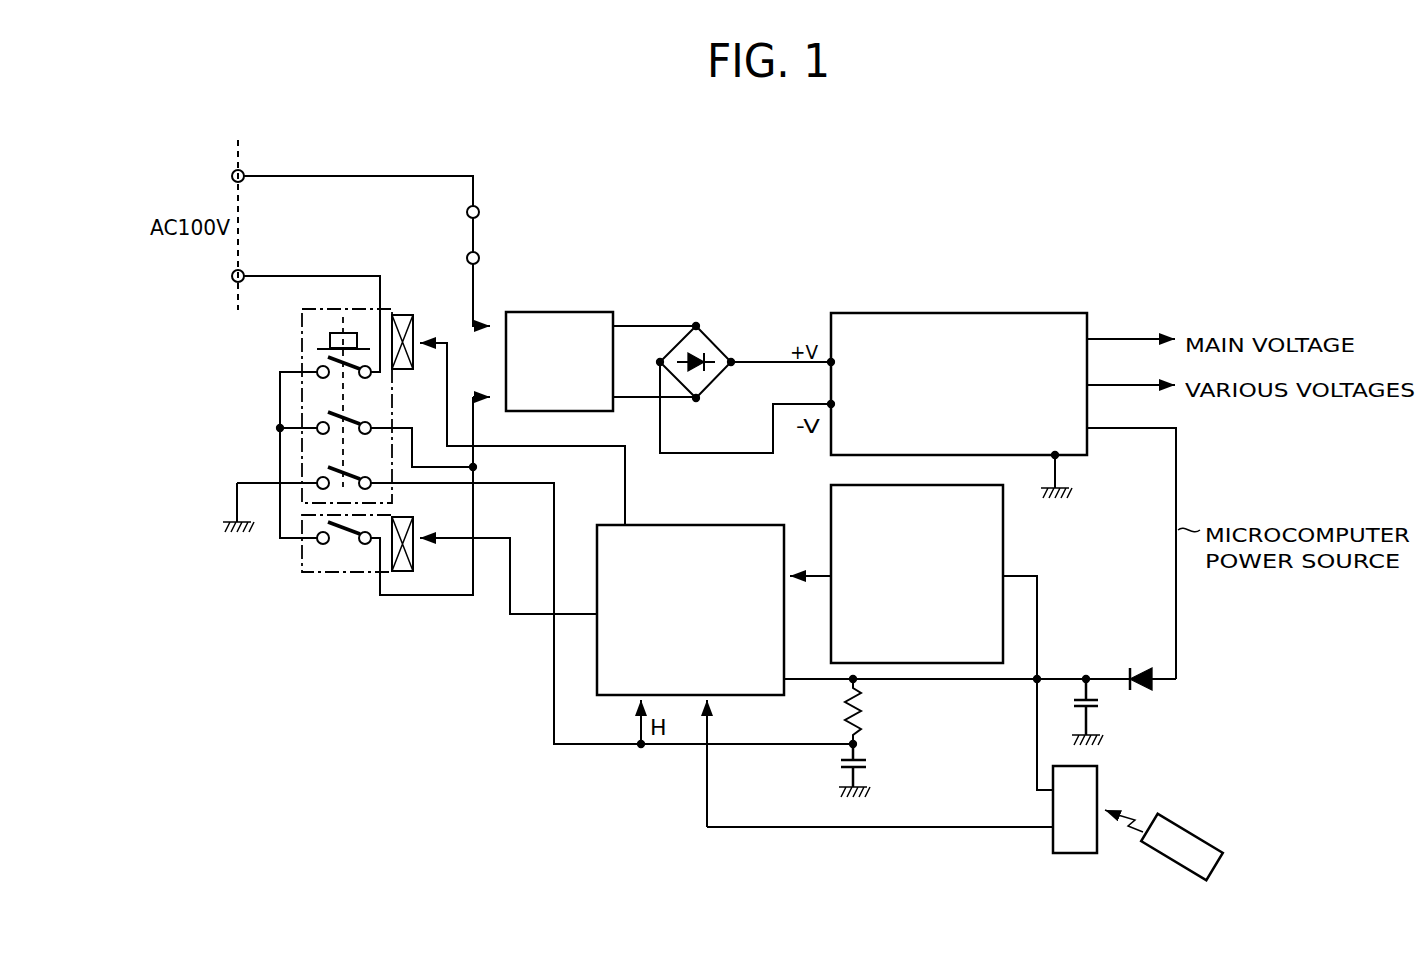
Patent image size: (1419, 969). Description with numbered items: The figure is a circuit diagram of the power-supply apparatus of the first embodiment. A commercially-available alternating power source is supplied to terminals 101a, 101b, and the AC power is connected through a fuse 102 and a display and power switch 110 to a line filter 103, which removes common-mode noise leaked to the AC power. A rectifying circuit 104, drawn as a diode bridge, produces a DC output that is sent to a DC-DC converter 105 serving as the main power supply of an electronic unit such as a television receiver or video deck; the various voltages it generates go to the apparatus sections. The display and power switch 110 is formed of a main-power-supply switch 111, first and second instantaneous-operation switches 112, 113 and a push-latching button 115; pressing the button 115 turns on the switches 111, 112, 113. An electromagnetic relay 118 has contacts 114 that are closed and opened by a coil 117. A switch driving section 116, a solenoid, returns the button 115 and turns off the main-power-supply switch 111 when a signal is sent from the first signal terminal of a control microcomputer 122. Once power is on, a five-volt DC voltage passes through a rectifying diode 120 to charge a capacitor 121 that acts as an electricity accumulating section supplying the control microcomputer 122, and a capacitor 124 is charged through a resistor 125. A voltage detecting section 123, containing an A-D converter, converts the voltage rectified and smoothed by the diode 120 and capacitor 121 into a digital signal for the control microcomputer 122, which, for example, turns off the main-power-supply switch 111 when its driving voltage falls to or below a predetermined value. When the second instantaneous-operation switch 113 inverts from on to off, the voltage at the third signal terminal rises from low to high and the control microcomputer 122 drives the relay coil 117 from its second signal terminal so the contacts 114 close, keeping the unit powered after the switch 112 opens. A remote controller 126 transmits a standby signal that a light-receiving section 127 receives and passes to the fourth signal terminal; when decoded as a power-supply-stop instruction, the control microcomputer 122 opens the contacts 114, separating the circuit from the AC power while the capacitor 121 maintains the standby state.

The terminal 101a is at (245, 172).
The terminal 101b is at (245, 272).
The fuse 102 is at (480, 236).
The line filter 103 is at (590, 312).
The rectifying circuit 104 is at (713, 385).
The DC-DC converter 105 is at (950, 313).
The display and power switch 110 is at (282, 326).
The main-power-supply switch 111 is at (326, 357).
The first instantaneous-operation switch 112 is at (326, 413).
The second instantaneous-operation switch 113 is at (326, 469).
The relay contacts 114 is at (340, 543).
The push-latching button 115 is at (333, 333).
The switch driving section 116 is at (406, 314).
The electromagnetic-relay coil 117 is at (406, 572).
The electromagnetic relay 118 is at (338, 574).
The rectifying diode 120 is at (1140, 672).
The capacitor C1 121 is at (1100, 703).
The control microcomputer 122 is at (722, 525).
The voltage detecting section 123 is at (1003, 545).
The capacitor C2 124 is at (872, 764).
The resistor 125 is at (868, 714).
The remote-control transmitter 126 is at (1197, 833).
The light-receiving section 127 is at (1097, 785).